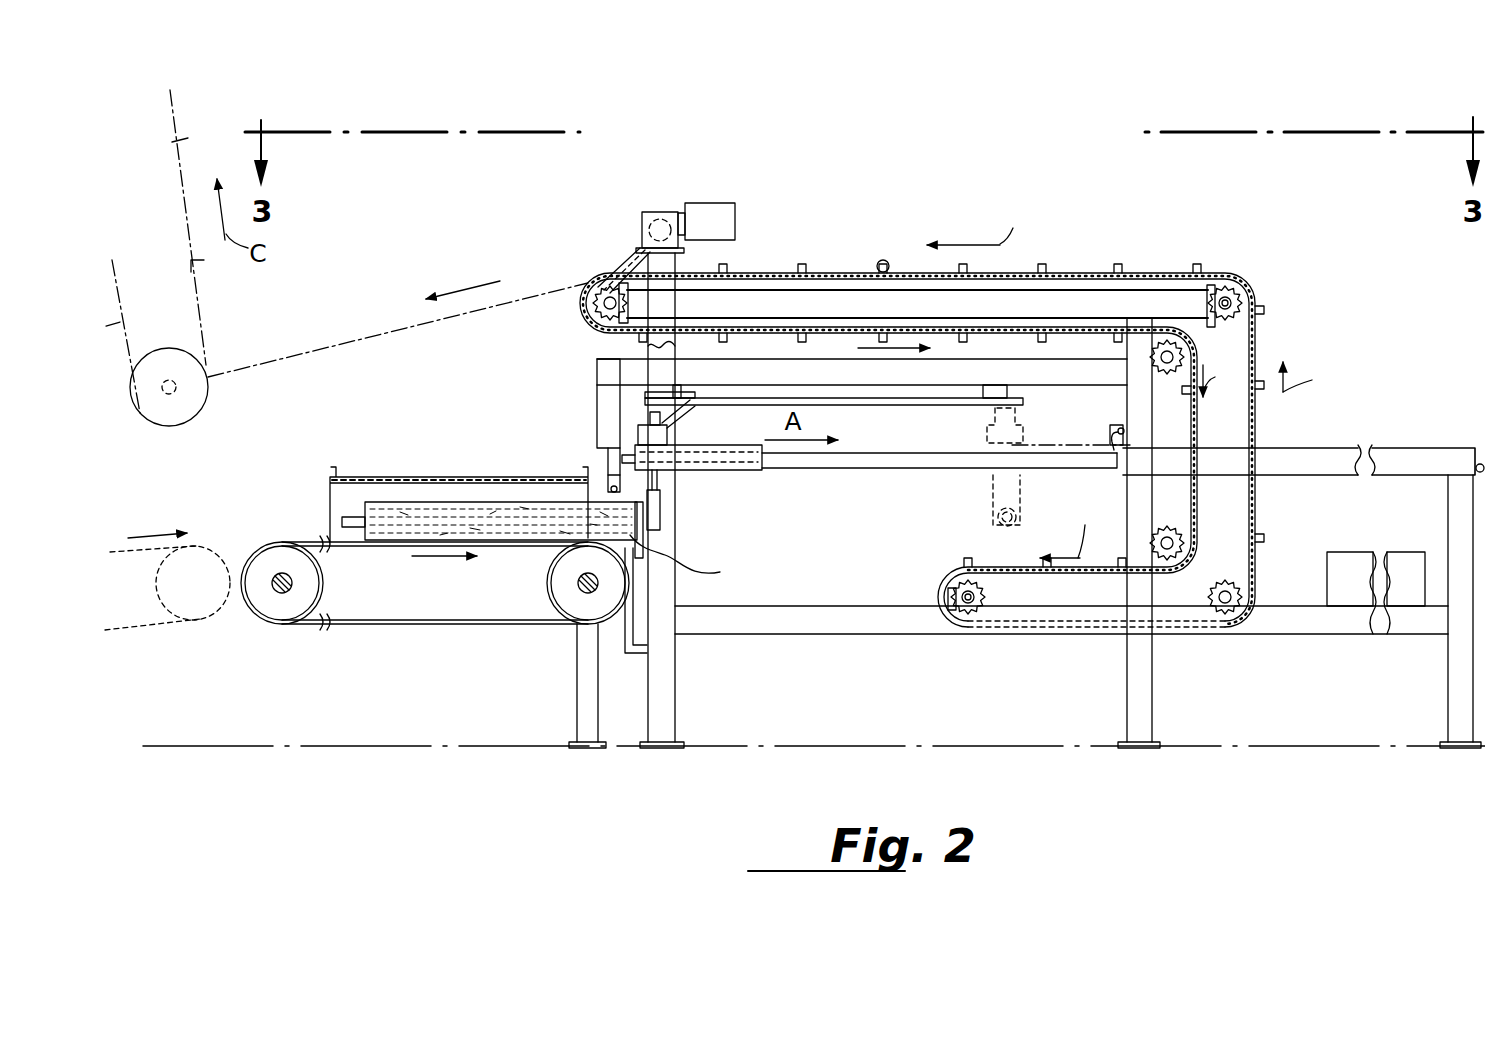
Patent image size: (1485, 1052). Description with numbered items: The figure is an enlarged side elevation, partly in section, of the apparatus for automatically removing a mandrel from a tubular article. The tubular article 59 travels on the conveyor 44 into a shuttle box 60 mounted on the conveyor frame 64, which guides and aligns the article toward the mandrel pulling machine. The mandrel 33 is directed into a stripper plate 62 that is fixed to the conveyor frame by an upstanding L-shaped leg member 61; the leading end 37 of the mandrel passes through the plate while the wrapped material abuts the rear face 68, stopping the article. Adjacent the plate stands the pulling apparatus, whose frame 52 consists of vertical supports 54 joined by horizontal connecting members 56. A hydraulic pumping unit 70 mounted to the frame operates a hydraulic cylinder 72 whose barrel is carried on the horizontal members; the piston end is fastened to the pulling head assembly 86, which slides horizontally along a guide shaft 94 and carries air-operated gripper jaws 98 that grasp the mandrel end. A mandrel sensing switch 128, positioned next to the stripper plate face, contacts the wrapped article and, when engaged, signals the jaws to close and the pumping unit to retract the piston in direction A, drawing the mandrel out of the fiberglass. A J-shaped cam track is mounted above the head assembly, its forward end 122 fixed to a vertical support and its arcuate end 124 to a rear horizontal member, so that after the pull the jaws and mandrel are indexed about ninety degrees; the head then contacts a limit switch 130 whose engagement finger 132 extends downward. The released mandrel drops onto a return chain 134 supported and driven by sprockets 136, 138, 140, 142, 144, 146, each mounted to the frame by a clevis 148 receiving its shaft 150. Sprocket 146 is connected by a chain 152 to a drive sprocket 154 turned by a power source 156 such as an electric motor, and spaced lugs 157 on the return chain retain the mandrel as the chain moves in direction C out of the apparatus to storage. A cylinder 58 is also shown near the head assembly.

The mandrel 33 is at (343, 518).
The leading end of mandrel 37 is at (665, 517).
The conveyor 44 is at (300, 540).
The frame 52 is at (565, 408).
The vertical supports 54 is at (650, 352).
The horizontal connecting members 56 is at (1057, 303).
The hydraulic cylinder 58 is at (675, 478).
The tubular article 59 is at (445, 500).
The shuttle box 60 is at (360, 475).
The L-shaped leg member 61 is at (630, 655).
The stripper plate 62 is at (693, 561).
The conveyor frame 64 is at (572, 673).
The rear face of stripper plate 68 is at (610, 530).
The hydraulic pumping unit 70 is at (1405, 552).
The hydraulic cylinder 72 is at (900, 445).
The pulling head assembly 86 is at (690, 438).
The guide shaft 94 is at (866, 456).
The gripper jaws 98 is at (662, 507).
The forward end of cam track 122 is at (662, 395).
The arcuate shaped end of cam track 124 is at (1000, 402).
The mandrel sensing switch 128 is at (609, 476).
The limit switch 130 is at (1120, 425).
The engagement finger 132 is at (1113, 448).
The return chain 134 is at (922, 272).
The sprocket 136 is at (986, 593).
The sprocket 138 is at (1230, 582).
The sprocket 140 is at (1172, 528).
The sprocket 142 is at (1170, 377).
The sprocket 144 is at (1243, 285).
The sprocket 146 is at (590, 305).
The clevis 148 is at (600, 316).
The sprocket shaft 150 is at (1240, 303).
The chain 152 is at (622, 258).
The drive sprocket 154 is at (660, 220).
The power source 156 is at (712, 213).
The stops or lugs 157 is at (884, 258).